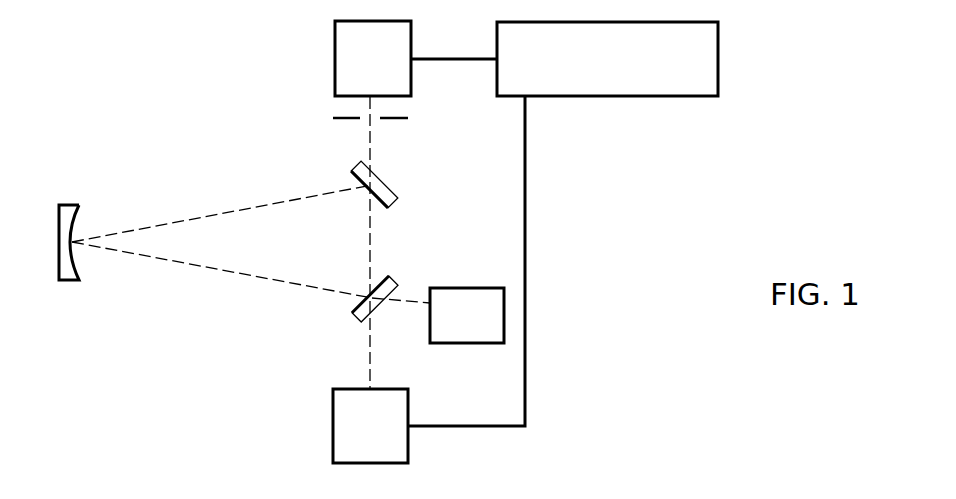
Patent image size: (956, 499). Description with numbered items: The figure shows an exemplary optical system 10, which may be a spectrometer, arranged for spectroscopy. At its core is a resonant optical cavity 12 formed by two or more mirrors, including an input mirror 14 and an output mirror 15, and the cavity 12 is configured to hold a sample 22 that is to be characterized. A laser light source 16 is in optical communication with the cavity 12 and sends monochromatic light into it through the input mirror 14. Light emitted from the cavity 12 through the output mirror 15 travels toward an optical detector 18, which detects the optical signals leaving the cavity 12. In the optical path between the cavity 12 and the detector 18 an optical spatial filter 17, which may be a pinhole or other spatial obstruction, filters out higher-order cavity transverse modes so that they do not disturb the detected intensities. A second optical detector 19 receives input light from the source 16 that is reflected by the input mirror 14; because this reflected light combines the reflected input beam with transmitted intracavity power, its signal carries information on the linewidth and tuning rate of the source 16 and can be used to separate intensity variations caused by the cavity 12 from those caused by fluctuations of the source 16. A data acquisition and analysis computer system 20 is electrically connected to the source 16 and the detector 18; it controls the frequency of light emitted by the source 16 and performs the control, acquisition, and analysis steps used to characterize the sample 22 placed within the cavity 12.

The optical system 10 is at (646, 355).
The resonant optical cavity 12 is at (186, 319).
The input mirror 14 is at (388, 288).
The output mirror 15 is at (385, 176).
The laser light source 16 is at (333, 427).
The optical spatial filter 17 is at (352, 121).
The optical detector 18 is at (335, 58).
The second optical detector 19 is at (457, 327).
The data acquisition and analysis computer system 20 is at (612, 97).
The sample 22 is at (252, 236).